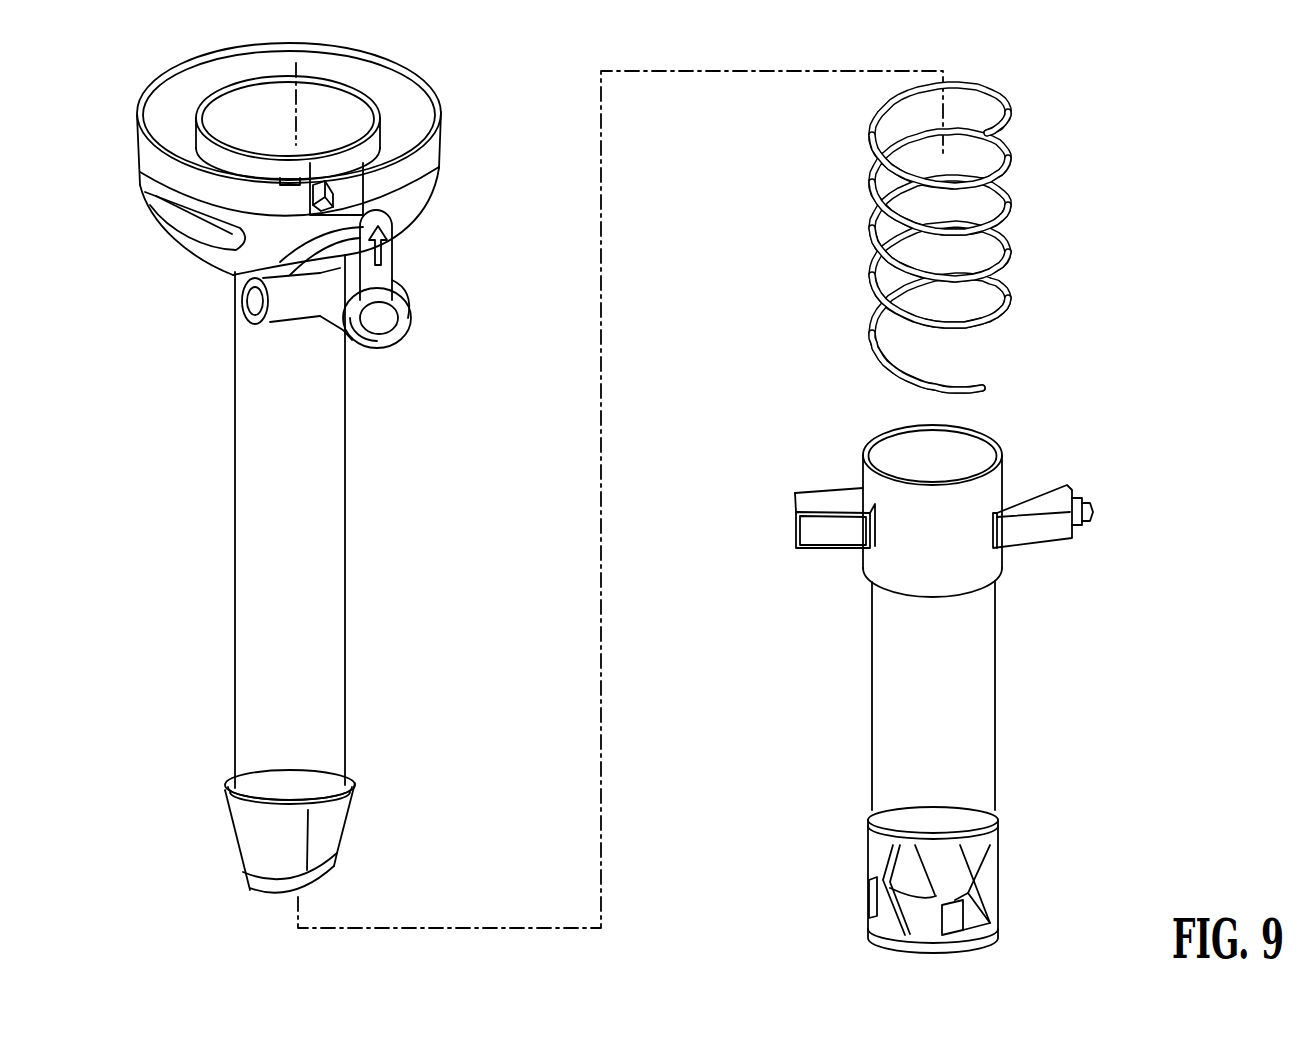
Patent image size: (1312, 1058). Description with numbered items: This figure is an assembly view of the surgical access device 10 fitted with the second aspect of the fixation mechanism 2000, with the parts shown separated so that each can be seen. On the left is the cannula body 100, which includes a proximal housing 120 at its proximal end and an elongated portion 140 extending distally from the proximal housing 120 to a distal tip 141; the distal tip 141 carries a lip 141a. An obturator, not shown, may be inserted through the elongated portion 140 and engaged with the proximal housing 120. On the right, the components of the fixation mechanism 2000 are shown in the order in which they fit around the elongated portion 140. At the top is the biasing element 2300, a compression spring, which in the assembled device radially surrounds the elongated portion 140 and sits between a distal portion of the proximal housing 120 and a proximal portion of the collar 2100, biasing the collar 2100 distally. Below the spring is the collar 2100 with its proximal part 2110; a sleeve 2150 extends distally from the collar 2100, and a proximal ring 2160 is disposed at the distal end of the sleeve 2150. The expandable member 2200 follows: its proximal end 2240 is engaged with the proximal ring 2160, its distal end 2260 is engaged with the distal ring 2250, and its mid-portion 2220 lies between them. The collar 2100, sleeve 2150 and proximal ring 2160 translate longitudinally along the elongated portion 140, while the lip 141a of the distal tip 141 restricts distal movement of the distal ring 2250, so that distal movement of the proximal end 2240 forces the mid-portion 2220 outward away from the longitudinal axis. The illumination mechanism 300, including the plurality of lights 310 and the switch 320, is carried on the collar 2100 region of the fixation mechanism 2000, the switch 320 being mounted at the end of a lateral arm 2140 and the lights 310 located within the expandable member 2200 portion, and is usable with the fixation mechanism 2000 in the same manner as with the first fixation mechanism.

The surgical access device 10 is at (97, 82).
The cannula body 100 is at (206, 379).
The proximal housing 120 is at (428, 160).
The elongated portion 140 is at (240, 480).
The distal tip 141 is at (265, 896).
The lip 141a is at (350, 778).
The fixation mechanism 2000 is at (1147, 155).
The biasing element 2300 is at (1010, 150).
The collar 2100 is at (950, 548).
The proximal part 2110 is at (1000, 437).
The lateral arm 2140 is at (1030, 528).
The sleeve 2150 is at (970, 707).
The proximal ring 2160 is at (870, 806).
The expandable member 2200 is at (1036, 828).
The mid-portion 2220 is at (933, 878).
The proximal end 2240 is at (957, 855).
The distal ring 2250 is at (893, 945).
The distal end 2260 is at (975, 935).
The illumination mechanism 300 is at (1018, 926).
The lights 310 is at (947, 913).
The switch 320 is at (1090, 505).